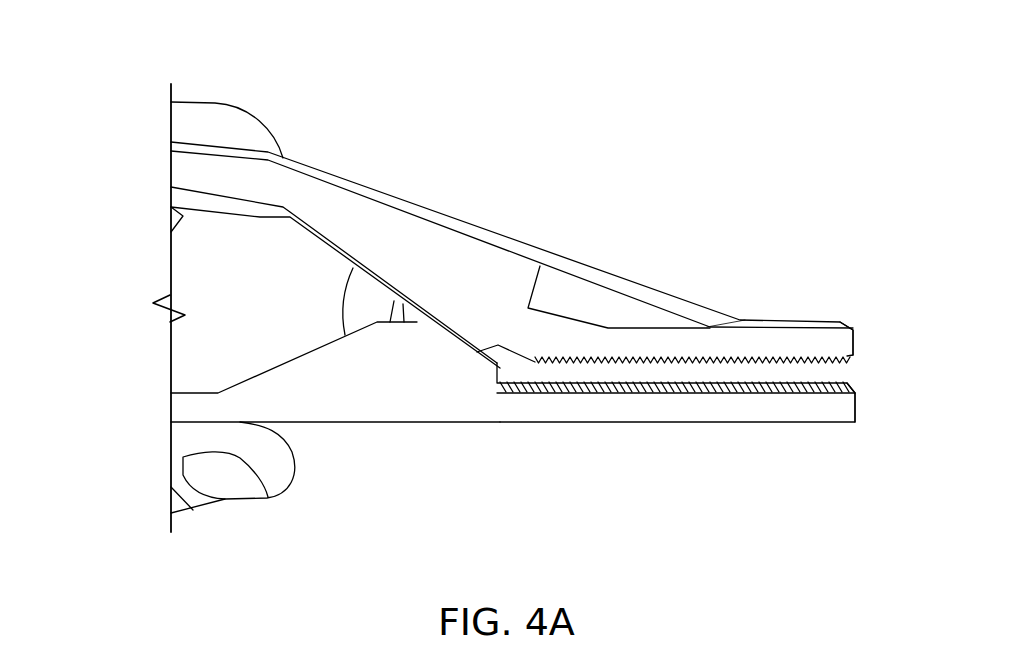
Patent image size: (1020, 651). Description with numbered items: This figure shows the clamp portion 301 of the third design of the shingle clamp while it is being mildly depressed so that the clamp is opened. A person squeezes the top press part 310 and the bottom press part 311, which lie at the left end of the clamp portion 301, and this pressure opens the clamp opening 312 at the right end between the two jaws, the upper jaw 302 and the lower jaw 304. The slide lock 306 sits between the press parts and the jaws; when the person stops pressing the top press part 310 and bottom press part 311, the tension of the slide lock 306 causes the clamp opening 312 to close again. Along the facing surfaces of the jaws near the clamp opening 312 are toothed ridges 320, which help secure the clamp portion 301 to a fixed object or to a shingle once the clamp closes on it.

The clamp portion 301 is at (182, 47).
The upper jaw 302 is at (620, 292).
The lower jaw 304 is at (615, 423).
The slide lock 306 is at (347, 292).
The top press part 310 is at (200, 167).
The bottom press part 311 is at (200, 409).
The clamp opening 312 is at (843, 382).
The toothed ridges 320 is at (760, 358).